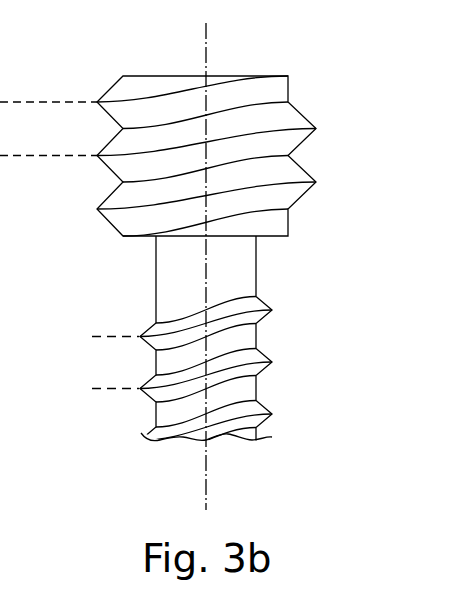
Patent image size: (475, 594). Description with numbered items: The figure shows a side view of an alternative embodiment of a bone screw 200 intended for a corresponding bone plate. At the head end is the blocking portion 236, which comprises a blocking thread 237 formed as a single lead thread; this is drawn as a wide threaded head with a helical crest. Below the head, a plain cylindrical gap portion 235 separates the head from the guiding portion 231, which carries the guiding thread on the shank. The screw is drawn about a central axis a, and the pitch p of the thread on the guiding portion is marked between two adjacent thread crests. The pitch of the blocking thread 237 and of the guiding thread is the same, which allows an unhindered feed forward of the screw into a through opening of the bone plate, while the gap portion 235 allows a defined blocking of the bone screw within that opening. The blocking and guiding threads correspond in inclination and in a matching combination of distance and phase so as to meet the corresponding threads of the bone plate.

The screw 200 is at (252, 258).
The blocking thread 237 is at (349, 236).
The blocking portion 236 is at (251, 133).
The gap portion 235 is at (349, 236).
The guiding portion 231 is at (274, 393).
The longitudinal axis a is at (206, 475).
The thread pitch p is at (102, 337).